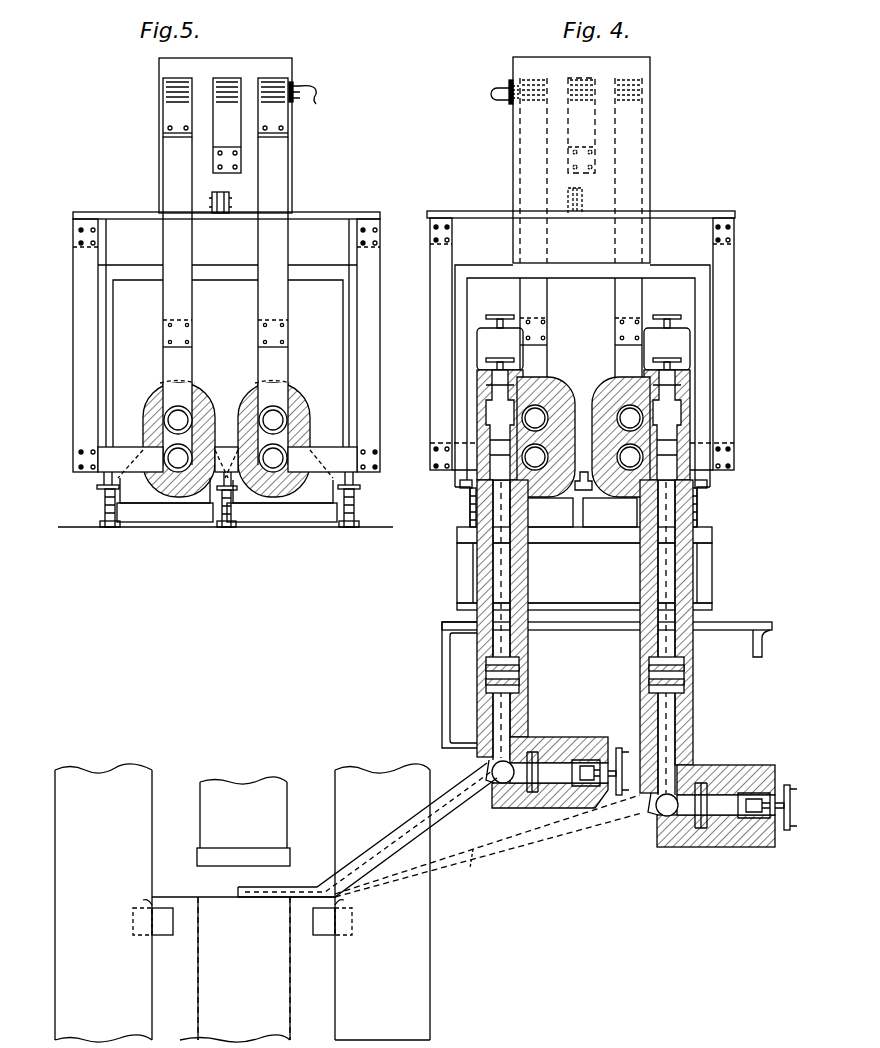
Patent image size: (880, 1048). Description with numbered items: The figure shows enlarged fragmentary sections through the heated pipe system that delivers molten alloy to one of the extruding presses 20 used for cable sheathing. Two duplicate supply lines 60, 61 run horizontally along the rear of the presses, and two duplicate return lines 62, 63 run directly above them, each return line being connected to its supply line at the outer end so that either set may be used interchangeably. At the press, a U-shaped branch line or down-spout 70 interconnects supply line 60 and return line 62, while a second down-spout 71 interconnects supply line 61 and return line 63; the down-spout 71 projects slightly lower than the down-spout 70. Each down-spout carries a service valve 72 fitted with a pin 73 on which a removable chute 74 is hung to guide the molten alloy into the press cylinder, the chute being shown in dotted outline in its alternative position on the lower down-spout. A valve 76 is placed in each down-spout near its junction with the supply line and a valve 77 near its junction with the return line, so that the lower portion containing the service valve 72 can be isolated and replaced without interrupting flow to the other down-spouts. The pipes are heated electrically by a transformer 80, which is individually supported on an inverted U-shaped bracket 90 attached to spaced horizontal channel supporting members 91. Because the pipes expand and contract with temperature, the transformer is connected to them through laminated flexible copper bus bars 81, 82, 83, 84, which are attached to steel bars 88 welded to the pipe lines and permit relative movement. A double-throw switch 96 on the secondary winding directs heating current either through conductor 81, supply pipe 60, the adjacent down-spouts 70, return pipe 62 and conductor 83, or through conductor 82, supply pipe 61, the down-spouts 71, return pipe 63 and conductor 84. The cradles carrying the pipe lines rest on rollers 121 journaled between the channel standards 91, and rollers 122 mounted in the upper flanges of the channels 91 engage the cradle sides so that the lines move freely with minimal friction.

In FIG. 4, the extruding press 20 is at (432, 977).
In FIG. 5, the supply line 60 is at (288, 457).
In FIG. 4, the supply line 60 is at (561, 402).
In FIG. 5, the supply line 61 is at (152, 444).
In FIG. 4, the supply line 61 is at (650, 400).
In FIG. 5, the return line 62 is at (300, 392).
In FIG. 4, the return line 62 is at (550, 387).
In FIG. 5, the return line 63 is at (152, 392).
In FIG. 4, the return line 63 is at (637, 380).
In FIG. 4, the branch line (down-spout) 70 is at (500, 566).
In FIG. 4, the branch line (down-spout) 71 is at (668, 586).
In FIG. 4, the service valve 72 is at (556, 778).
In FIG. 4, the pin 73 is at (489, 762).
In FIG. 4, the removable chute 74 is at (452, 856).
In FIG. 4, the valve 76 is at (478, 410).
In FIG. 4, the valve 77 is at (500, 315).
In FIG. 5, the transformer 80 is at (291, 158).
In FIG. 4, the transformer 80 is at (650, 143).
In FIG. 5, the flexible conductor (bus bar) 81 is at (372, 343).
In FIG. 4, the flexible conductor (bus bar) 81 is at (441, 298).
In FIG. 5, the flexible conductor (bus bar) 82 is at (283, 180).
In FIG. 4, the flexible conductor (bus bar) 82 is at (546, 297).
In FIG. 5, the flexible conductor (bus bar) 83 is at (90, 345).
In FIG. 4, the flexible conductor (bus bar) 83 is at (727, 415).
In FIG. 5, the flexible conductor (bus bar) 84 is at (175, 172).
In FIG. 4, the flexible conductor (bus bar) 84 is at (623, 294).
In FIG. 5, the steel bar 88 is at (268, 360).
In FIG. 5, the inverted U-shaped bracket 90 is at (104, 294).
In FIG. 4, the inverted U-shaped bracket 90 is at (705, 347).
In FIG. 5, the horizontal channel supporting member 91 is at (106, 530).
In FIG. 4, the horizontal channel supporting member 91 is at (466, 505).
In FIG. 5, the double-throw switch 96 is at (316, 104).
In FIG. 4, the double-throw switch 96 is at (495, 102).
In FIG. 5, the roller 121 is at (168, 513).
In FIG. 4, the roller 121 is at (555, 543).
In FIG. 5, the roller 122 is at (228, 485).
In FIG. 4, the roller 122 is at (584, 489).